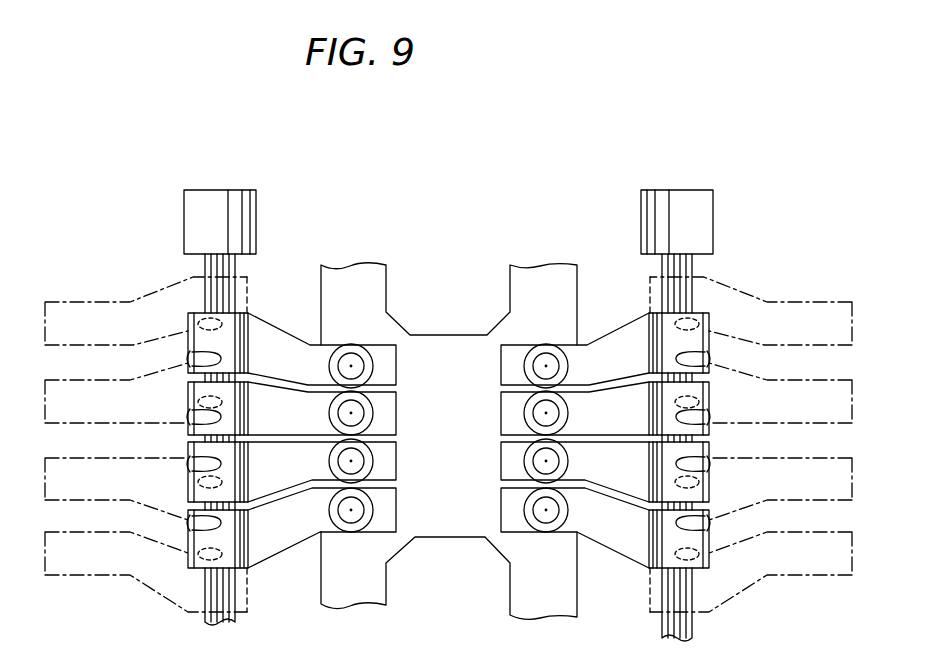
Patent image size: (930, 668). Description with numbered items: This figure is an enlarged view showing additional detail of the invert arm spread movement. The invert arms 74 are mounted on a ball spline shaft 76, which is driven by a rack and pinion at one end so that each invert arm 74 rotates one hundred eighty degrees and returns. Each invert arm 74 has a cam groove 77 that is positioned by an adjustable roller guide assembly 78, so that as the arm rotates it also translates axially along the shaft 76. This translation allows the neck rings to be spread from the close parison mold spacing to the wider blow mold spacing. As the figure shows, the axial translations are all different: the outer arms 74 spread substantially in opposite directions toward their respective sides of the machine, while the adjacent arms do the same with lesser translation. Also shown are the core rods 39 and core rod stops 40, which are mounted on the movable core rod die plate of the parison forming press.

The core rod 39 is at (548, 366).
The core rod stop 40 is at (526, 370).
The invert arm 74 is at (129, 301).
The ball spline shaft 76 is at (236, 266).
The cam groove 77 is at (683, 405).
The adjustable roller guide assembly 78 is at (660, 482).